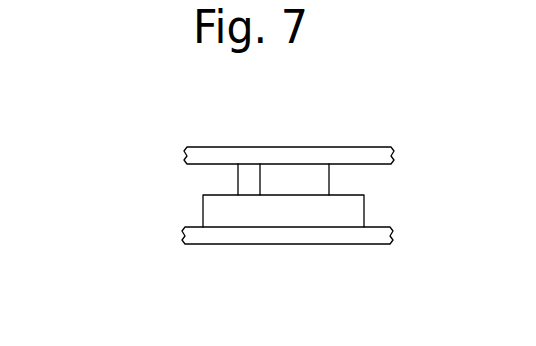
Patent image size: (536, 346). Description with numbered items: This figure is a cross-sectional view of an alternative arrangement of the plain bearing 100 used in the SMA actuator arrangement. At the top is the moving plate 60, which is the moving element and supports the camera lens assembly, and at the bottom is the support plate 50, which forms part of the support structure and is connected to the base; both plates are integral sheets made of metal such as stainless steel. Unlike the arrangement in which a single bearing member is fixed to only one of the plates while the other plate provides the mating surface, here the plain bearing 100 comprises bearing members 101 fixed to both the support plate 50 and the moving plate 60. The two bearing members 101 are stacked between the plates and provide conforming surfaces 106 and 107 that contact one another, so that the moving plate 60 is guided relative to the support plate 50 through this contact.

The plain bearing 100 is at (175, 189).
The moving plate 60 is at (211, 156).
The support plate 50 is at (216, 238).
The conforming surface 107 is at (287, 197).
The conforming surface 106 is at (262, 195).
The bearing member 101 is at (310, 177).